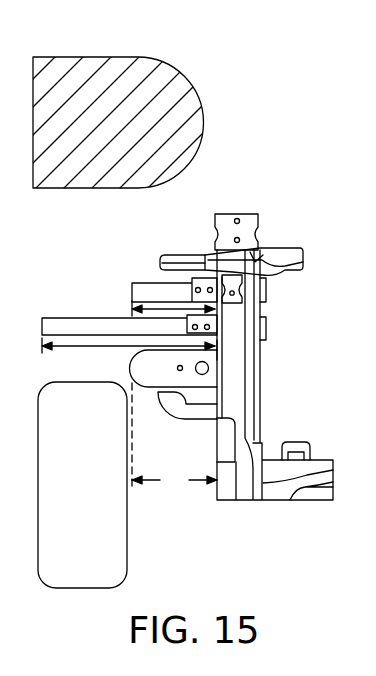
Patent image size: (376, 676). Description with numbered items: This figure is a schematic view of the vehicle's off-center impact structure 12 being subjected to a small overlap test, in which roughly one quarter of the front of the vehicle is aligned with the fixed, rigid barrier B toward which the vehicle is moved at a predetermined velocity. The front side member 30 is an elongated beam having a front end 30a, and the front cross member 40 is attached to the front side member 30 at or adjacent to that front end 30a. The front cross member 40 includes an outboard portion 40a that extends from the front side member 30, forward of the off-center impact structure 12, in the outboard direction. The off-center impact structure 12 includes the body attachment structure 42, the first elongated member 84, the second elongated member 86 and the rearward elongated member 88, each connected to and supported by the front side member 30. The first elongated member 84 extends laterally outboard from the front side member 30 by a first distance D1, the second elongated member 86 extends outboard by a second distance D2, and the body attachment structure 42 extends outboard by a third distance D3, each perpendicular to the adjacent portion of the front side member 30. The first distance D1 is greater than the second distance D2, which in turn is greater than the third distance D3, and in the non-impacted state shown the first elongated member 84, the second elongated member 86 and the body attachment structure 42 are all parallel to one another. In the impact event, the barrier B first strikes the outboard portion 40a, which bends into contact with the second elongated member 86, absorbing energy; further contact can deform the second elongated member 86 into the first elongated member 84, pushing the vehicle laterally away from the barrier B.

The barrier B is at (88, 97).
The off-center impact structure 12 is at (86, 246).
The front side member 30 is at (262, 357).
The front end 30a is at (248, 223).
The front cross member 40 is at (290, 255).
The outboard portion 40a is at (175, 252).
The body attachment structure 42 is at (155, 372).
The first elongated member 84 is at (63, 328).
The second elongated member 86 is at (143, 293).
The rearward elongated member 88 is at (185, 412).
The first distance D1 is at (129, 354).
The second distance D2 is at (160, 313).
The third distance D3 is at (174, 482).